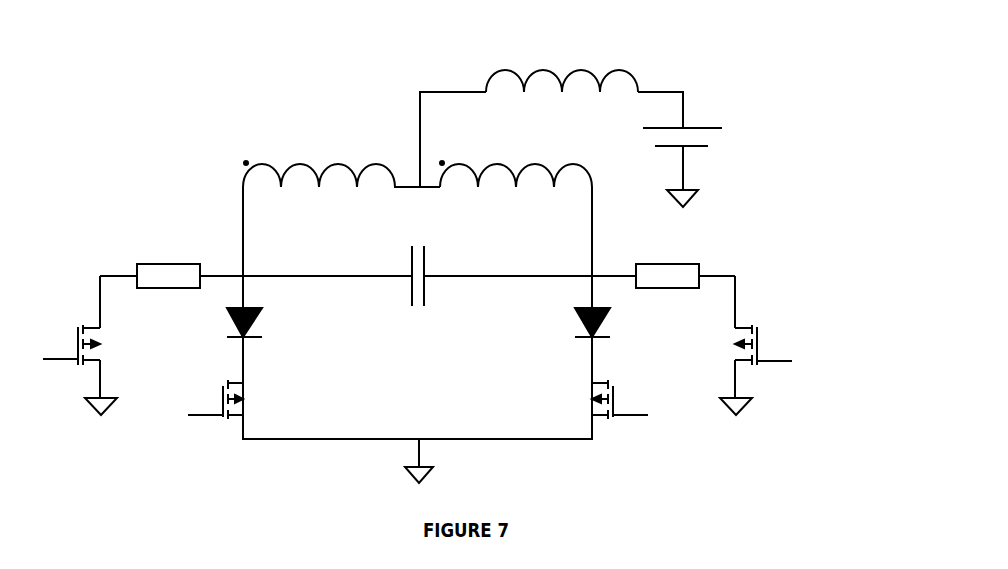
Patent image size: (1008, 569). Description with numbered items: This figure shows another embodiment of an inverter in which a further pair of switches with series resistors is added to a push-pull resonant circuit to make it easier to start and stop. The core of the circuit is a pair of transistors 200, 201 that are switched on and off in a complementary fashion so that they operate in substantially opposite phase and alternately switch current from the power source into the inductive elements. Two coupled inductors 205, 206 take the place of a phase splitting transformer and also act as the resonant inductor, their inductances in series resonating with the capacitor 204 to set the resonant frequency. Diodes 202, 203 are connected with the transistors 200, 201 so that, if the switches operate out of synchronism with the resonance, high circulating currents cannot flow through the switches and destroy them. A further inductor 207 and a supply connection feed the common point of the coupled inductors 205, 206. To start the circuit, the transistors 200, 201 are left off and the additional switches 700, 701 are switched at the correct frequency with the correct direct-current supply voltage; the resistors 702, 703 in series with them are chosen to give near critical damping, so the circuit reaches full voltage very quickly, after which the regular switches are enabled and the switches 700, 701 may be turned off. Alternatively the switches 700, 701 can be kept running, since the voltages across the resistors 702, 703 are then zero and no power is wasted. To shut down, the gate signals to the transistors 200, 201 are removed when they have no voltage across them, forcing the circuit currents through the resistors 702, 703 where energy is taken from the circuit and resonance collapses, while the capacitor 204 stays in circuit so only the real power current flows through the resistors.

The transistor 200 is at (252, 399).
The transistor 201 is at (583, 398).
The diode 202 is at (271, 322).
The diode 203 is at (564, 323).
The capacitor 204 is at (418, 260).
The coupled inductor 205 is at (341, 154).
The coupled inductor 206 is at (515, 154).
The supply inductor 207 is at (562, 61).
The switch 700 is at (100, 370).
The switch 701 is at (736, 370).
The resistor 702 is at (168, 260).
The resistor 703 is at (667, 260).